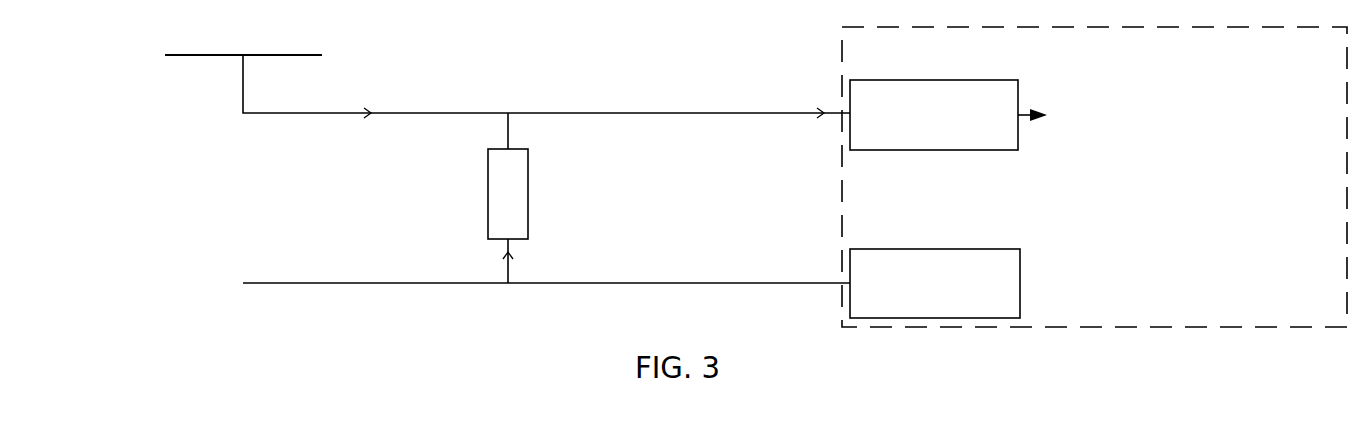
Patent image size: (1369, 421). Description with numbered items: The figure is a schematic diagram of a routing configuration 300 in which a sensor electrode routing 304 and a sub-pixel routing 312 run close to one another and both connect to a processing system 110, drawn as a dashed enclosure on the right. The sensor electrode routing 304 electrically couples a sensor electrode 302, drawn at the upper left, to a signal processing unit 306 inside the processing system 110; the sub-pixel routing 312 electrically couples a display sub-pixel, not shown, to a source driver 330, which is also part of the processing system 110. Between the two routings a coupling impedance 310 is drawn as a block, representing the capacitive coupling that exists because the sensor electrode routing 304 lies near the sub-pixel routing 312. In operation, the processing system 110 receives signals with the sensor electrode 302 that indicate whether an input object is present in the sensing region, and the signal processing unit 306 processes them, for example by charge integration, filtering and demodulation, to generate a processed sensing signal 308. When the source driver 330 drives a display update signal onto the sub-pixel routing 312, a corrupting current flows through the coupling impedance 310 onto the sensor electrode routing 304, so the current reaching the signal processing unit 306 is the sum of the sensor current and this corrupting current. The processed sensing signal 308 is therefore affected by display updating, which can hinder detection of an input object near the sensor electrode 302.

The routing configuration 300 is at (130, 159).
The sensor electrode 302 is at (185, 55).
The sensor electrode routing 304 is at (405, 113).
The signal processing unit 306 is at (1010, 141).
The processed sensing signal 308 is at (1113, 117).
The coupling impedance 310 is at (528, 203).
The sub-pixel routing 312 is at (543, 283).
The processing system 110 is at (1210, 63).
The source driver 330 is at (955, 310).